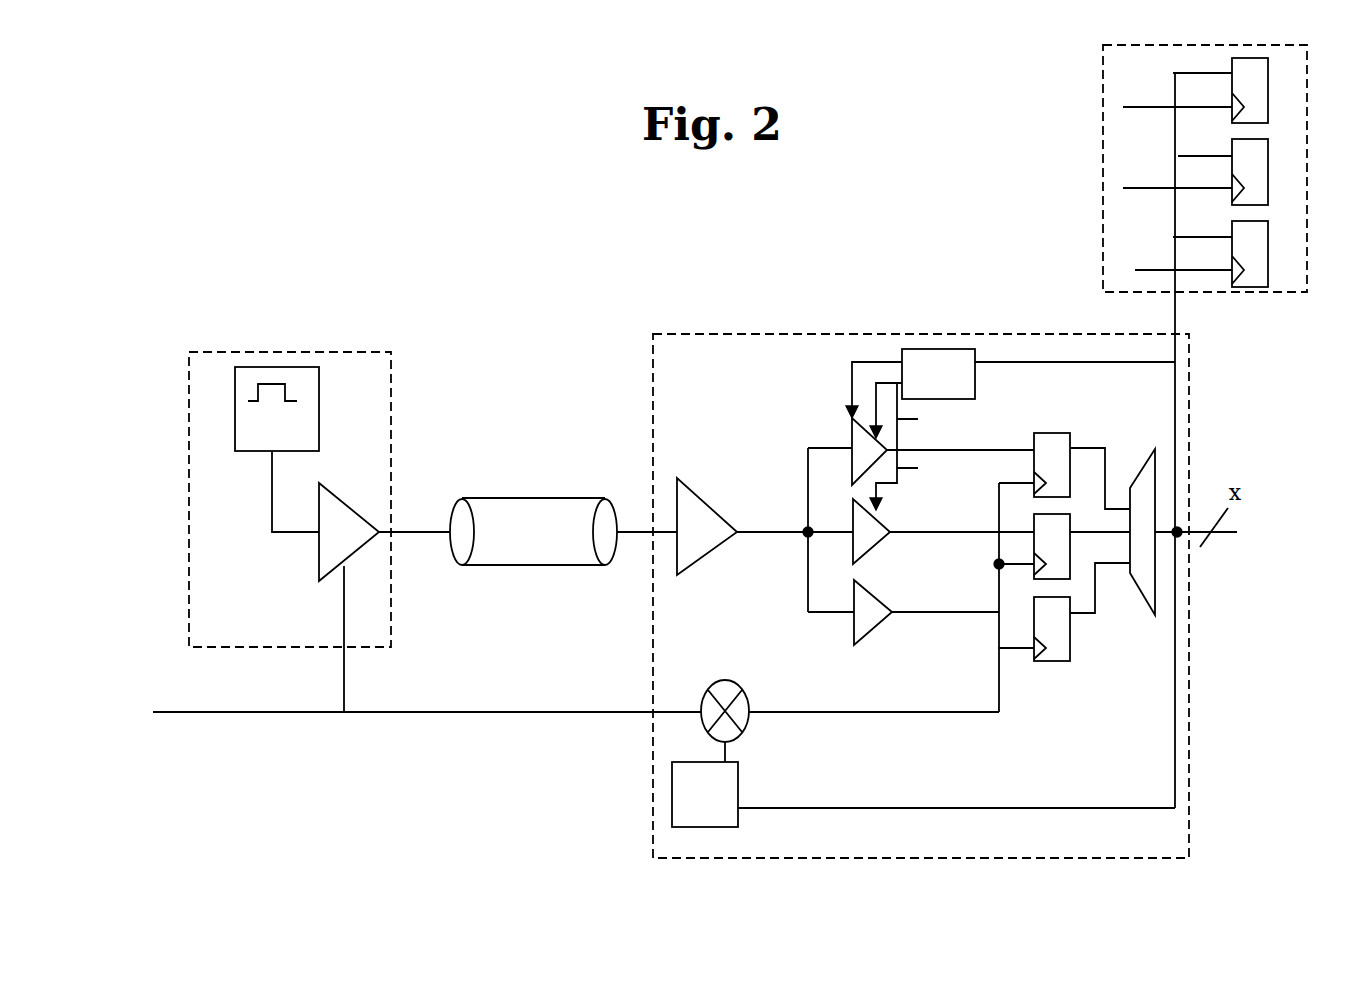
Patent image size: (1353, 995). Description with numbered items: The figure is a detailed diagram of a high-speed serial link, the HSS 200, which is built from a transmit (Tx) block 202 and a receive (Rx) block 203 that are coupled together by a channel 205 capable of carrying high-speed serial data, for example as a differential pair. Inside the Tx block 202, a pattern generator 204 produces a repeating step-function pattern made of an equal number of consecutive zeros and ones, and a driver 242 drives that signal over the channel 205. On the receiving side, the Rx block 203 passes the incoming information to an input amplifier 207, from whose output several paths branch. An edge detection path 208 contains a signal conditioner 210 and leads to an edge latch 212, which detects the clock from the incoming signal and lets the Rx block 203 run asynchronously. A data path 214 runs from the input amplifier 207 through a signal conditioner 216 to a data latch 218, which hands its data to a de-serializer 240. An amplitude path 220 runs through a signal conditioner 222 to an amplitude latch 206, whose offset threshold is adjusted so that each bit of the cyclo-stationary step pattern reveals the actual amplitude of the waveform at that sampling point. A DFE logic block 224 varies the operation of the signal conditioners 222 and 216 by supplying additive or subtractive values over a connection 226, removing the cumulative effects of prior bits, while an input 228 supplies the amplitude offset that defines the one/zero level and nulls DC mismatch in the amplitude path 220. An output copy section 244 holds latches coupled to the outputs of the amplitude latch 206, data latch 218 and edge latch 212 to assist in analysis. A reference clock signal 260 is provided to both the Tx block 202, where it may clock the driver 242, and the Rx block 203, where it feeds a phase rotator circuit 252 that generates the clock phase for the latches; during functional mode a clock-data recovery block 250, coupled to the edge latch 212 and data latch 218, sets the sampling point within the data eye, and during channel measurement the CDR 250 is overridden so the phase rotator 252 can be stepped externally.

The HSS 200 is at (472, 783).
The transmit (Tx) block 202 is at (265, 352).
The receive (Rx) block 203 is at (1189, 387).
The pattern generator 204 is at (319, 400).
The channel 205 is at (537, 498).
The amplitude latch 206 is at (1048, 432).
The input amplifier 207 is at (679, 478).
The edge detection path 208 is at (830, 617).
The signal conditioner 210 is at (853, 645).
The edge latch 212 is at (1065, 661).
The data path 214 is at (822, 508).
The signal conditioner 216 is at (853, 542).
The data latch 218 is at (1070, 572).
The amplitude path 220 is at (833, 530).
The signal conditioner 222 is at (850, 420).
The DFE logic block 224 is at (937, 350).
The connection 226 is at (921, 446).
The input 228 is at (882, 362).
The de-serializer 240 is at (1155, 573).
The driver 242 is at (347, 500).
The output copy section 244 is at (1103, 190).
The clock-data recovery block (CDR) 250 is at (672, 808).
The phase rotator circuit (PR) 252 is at (706, 693).
The reference clock signal 260 is at (288, 713).